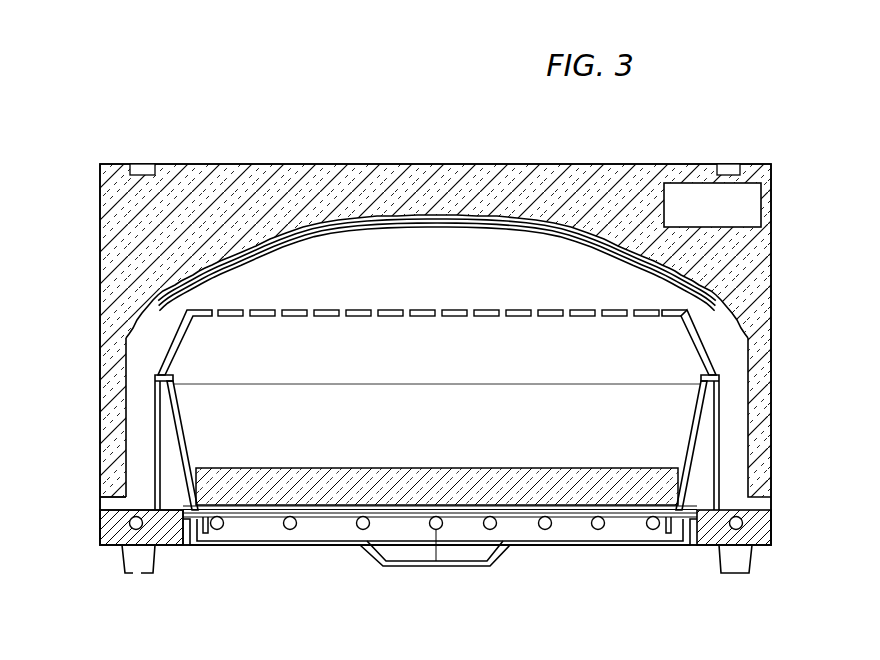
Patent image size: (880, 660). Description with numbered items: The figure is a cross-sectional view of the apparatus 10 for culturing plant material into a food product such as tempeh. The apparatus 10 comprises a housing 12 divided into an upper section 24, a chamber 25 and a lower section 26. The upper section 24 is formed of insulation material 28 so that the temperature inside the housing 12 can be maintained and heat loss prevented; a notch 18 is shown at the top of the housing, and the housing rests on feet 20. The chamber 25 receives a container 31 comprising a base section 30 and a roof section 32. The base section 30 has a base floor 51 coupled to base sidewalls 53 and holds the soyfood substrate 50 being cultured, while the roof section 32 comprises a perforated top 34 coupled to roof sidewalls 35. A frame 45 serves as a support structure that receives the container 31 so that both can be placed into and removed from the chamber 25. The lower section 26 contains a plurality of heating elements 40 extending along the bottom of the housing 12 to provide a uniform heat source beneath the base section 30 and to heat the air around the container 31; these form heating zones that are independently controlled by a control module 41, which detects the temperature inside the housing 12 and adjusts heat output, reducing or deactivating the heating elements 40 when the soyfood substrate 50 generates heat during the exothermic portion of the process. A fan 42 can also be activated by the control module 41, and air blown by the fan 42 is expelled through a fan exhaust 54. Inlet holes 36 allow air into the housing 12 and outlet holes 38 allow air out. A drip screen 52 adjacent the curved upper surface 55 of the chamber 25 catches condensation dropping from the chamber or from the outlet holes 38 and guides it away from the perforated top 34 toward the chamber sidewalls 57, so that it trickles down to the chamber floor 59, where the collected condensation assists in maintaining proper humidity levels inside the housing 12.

The apparatus 10 is at (146, 66).
The housing 12 is at (231, 156).
The top notch 18 is at (142, 163).
The support leg 20 is at (138, 568).
The upper section 24 is at (99, 212).
The chamber 25 is at (401, 253).
The lower section 26 is at (99, 533).
The insulation material 28 is at (143, 292).
The base section 30 is at (187, 442).
The container 31 is at (722, 343).
The roof section 32 is at (165, 348).
The perforated top 34 is at (581, 306).
The roof sidewalls 35 is at (692, 312).
The inlet holes 36 is at (99, 498).
The outlet holes 38 is at (439, 231).
The heating element 40 is at (358, 533).
The control module 41 is at (704, 185).
The fan 42 is at (417, 548).
The frame 45 is at (720, 425).
The soyfood substrate 50 is at (580, 490).
The base floor 51 is at (632, 506).
The drip screen 52 is at (322, 230).
The base sidewalls 53 is at (192, 448).
The fan exhaust 54 is at (688, 538).
The upper surface 55 is at (502, 226).
The chamber sidewalls 57 is at (152, 392).
The chamber floor 59 is at (150, 503).